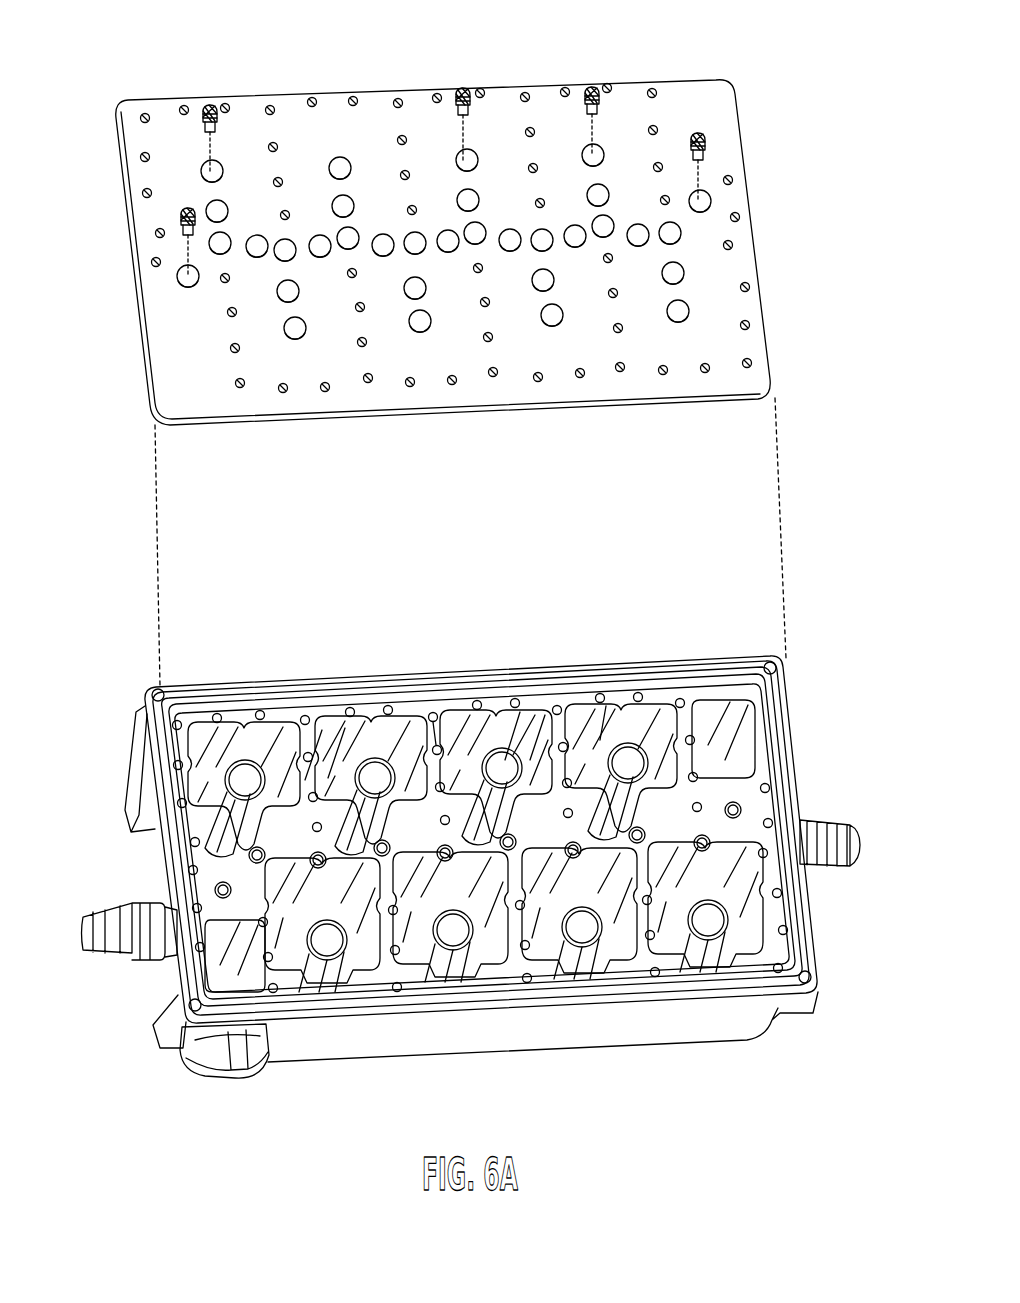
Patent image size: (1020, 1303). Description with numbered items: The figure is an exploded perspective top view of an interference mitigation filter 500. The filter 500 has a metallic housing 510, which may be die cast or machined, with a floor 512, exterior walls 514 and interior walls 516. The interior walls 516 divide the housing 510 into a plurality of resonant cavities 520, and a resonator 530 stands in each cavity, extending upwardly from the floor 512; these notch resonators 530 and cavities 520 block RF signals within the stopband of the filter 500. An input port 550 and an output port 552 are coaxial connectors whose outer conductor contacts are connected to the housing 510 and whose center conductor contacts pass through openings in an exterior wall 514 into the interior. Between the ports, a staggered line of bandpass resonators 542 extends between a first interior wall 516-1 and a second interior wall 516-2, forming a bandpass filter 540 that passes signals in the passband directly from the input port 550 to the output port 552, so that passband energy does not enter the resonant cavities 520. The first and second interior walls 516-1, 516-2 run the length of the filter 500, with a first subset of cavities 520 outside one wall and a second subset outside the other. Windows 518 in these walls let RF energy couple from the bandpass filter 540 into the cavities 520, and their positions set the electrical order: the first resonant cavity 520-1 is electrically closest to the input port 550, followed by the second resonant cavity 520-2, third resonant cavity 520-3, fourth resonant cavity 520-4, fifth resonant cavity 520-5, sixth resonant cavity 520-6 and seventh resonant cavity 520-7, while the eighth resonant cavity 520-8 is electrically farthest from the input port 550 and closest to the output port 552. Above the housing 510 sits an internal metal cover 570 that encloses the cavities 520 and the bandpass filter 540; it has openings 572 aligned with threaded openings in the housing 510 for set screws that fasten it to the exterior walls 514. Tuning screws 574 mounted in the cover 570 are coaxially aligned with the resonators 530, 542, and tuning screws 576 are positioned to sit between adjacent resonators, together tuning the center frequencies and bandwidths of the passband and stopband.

The interference mitigation filter 500 is at (156, 650).
The metallic housing 510 is at (744, 658).
The floor 512 is at (329, 772).
The exterior walls 514 is at (146, 758).
The interior walls 516 is at (436, 715).
The first interior wall 516-1 is at (667, 737).
The second interior wall 516-2 is at (690, 975).
The windows 518 is at (367, 995).
The resonant cavities 520 is at (601, 705).
The first resonant cavity 520-1 is at (207, 735).
The second resonant cavity 520-2 is at (283, 958).
The third resonant cavity 520-3 is at (365, 735).
The fourth resonant cavity 520-4 is at (482, 984).
The fifth resonant cavity 520-5 is at (478, 703).
The sixth resonant cavity 520-6 is at (607, 972).
The seventh resonant cavity 520-7 is at (630, 717).
The eighth resonant cavity 520-8 is at (738, 964).
The resonators 530 is at (248, 776).
The bandpass filter 540 is at (204, 872).
The bandpass resonators 542 is at (740, 806).
The input port 550 is at (112, 958).
The output port 552 is at (820, 822).
The internal metal cover 570 is at (700, 95).
The openings 572 is at (580, 376).
The tuning screws 574 is at (463, 95).
The tuning screws 576 is at (178, 216).